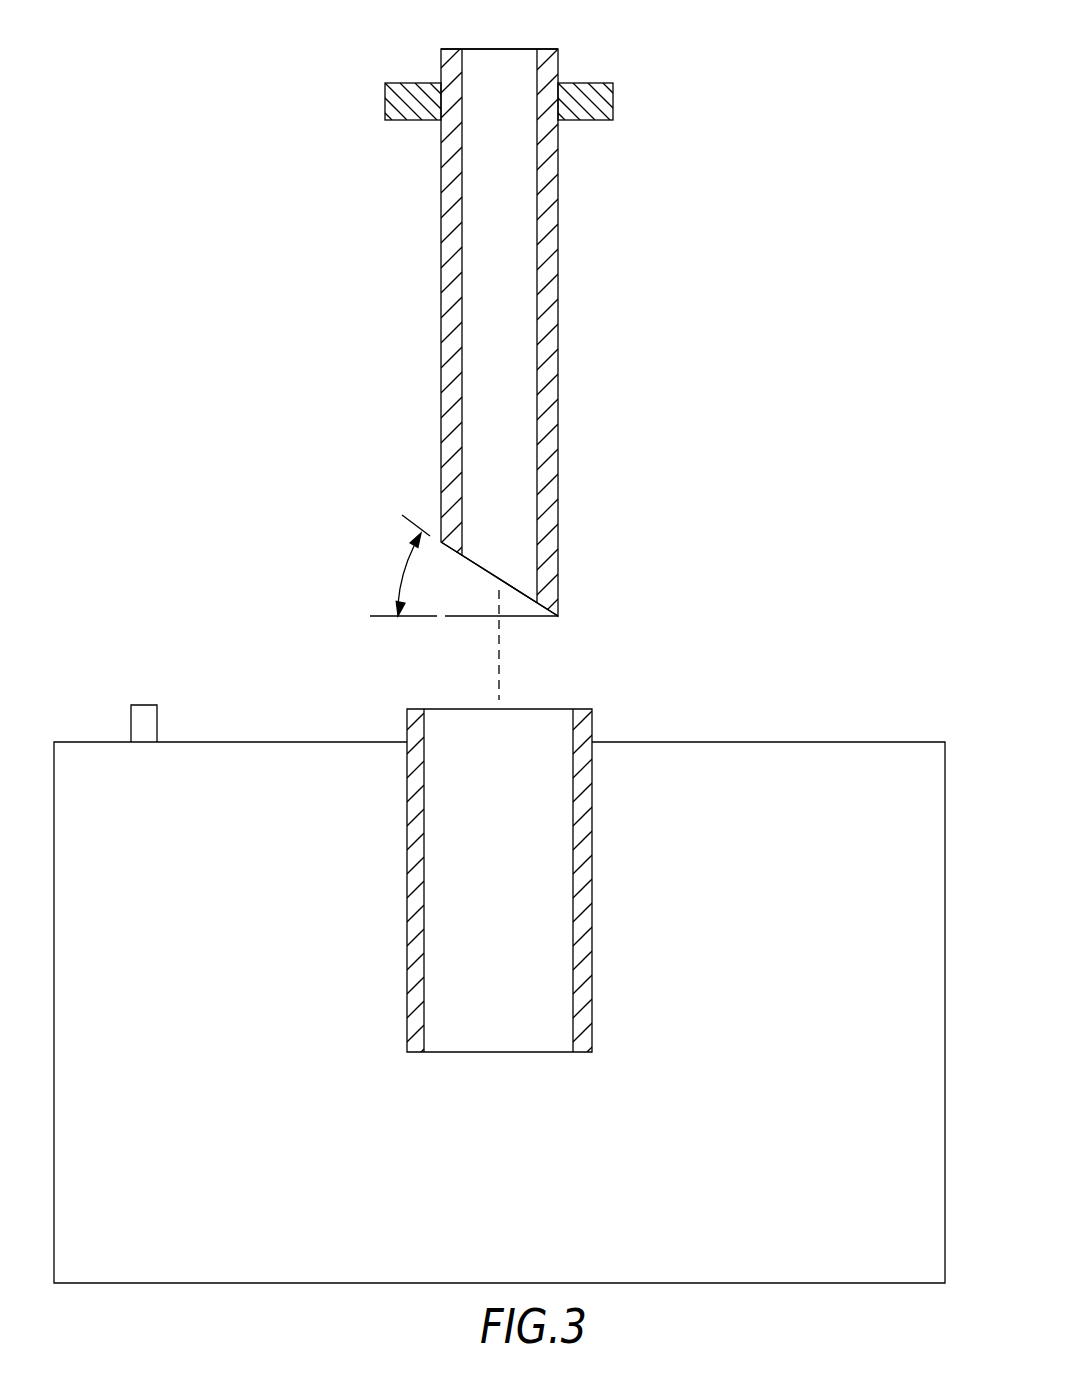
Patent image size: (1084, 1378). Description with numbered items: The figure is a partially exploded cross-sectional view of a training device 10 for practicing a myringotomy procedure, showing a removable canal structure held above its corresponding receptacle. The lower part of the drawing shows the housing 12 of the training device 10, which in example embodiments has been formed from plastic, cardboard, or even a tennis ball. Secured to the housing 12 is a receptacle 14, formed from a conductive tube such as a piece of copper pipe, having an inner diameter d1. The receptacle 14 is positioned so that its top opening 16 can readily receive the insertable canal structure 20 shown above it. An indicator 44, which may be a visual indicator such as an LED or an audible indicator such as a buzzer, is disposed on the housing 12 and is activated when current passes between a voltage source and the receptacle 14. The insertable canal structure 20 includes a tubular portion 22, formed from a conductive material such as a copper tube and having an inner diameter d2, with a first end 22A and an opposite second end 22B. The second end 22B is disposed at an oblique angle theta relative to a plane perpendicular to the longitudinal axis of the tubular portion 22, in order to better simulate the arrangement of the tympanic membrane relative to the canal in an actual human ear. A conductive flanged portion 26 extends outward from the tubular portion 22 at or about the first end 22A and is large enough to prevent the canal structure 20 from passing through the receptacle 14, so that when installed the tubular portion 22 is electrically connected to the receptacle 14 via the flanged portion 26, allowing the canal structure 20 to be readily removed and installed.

The training device 10 is at (545, 358).
The housing 12 is at (499, 961).
The receptacle 14 is at (593, 860).
The top opening 16 is at (527, 852).
The insertable canal structure 20 is at (450, 318).
The tubular portion 22 is at (548, 325).
The first end 22A is at (436, 44).
The second end 22B is at (366, 578).
The flanged portion 26 is at (614, 105).
The indicator 44 is at (159, 718).
The inner diameter of receptacle d1 is at (435, 805).
The inner diameter of tubular portion d2 is at (473, 287).
The oblique angle theta is at (366, 539).